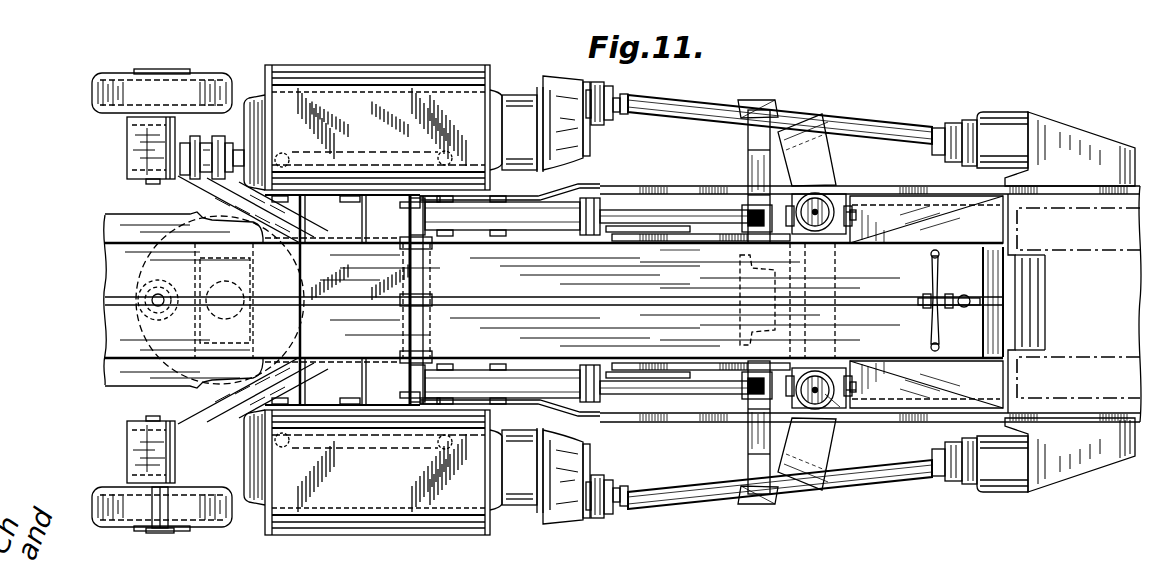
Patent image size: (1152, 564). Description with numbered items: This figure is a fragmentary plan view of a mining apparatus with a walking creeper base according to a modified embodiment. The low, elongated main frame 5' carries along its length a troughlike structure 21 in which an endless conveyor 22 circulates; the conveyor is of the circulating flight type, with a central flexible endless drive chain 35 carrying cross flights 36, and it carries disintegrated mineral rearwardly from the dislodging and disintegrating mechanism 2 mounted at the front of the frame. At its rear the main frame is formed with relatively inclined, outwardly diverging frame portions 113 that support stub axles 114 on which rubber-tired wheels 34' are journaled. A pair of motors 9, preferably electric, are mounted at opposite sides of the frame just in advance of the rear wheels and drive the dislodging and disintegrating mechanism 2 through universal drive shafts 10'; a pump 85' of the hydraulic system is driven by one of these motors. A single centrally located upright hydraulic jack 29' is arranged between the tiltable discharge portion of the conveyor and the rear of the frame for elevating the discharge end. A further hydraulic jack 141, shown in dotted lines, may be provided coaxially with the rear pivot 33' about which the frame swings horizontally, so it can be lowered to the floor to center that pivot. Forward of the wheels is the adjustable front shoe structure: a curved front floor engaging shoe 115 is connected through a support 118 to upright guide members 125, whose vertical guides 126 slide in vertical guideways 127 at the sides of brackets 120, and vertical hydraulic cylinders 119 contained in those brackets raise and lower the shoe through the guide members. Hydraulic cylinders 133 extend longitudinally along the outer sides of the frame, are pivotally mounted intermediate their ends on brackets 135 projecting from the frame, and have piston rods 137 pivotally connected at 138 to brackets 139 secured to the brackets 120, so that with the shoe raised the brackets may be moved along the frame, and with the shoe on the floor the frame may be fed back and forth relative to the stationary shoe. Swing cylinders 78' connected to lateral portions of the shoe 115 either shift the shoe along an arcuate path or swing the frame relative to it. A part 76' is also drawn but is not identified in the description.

The mine vein dislodging and disintegrating mechanism 2 is at (1122, 424).
The main frame 5' is at (684, 206).
The motors 9 is at (368, 78).
The universal drive shafts 10' is at (780, 300).
The troughlike structure 21 is at (603, 262).
The endless conveyor 22 is at (964, 307).
The upright hydraulic jack 29' is at (243, 300).
The pivot 33' is at (122, 295).
The rubber-tired wheels 34' is at (160, 301).
The central flexible endless drive chain 35 is at (958, 296).
The cross flights 36 is at (931, 259).
The shaft bracket 76' is at (755, 290).
The swing cylinders 78' is at (732, 302).
The pump 85' is at (212, 147).
The frame portions 113 is at (203, 186).
The stub axles 114 is at (158, 500).
The curved front floor engaging shoe 115 is at (828, 158).
The support 118 is at (820, 399).
The vertical hydraulic cylinders 119 is at (832, 217).
The brackets 120 is at (818, 206).
The upright guide members 125 is at (848, 216).
The vertical guides 126 is at (848, 213).
The vertical guideways 127 is at (852, 223).
The hydraulic cylinders 133 is at (554, 207).
The brackets 135 is at (514, 232).
The piston rods 137 is at (650, 214).
The pivotal connection 138 is at (748, 207).
The brackets 139 is at (746, 242).
The hydraulic jack 141 is at (112, 333).